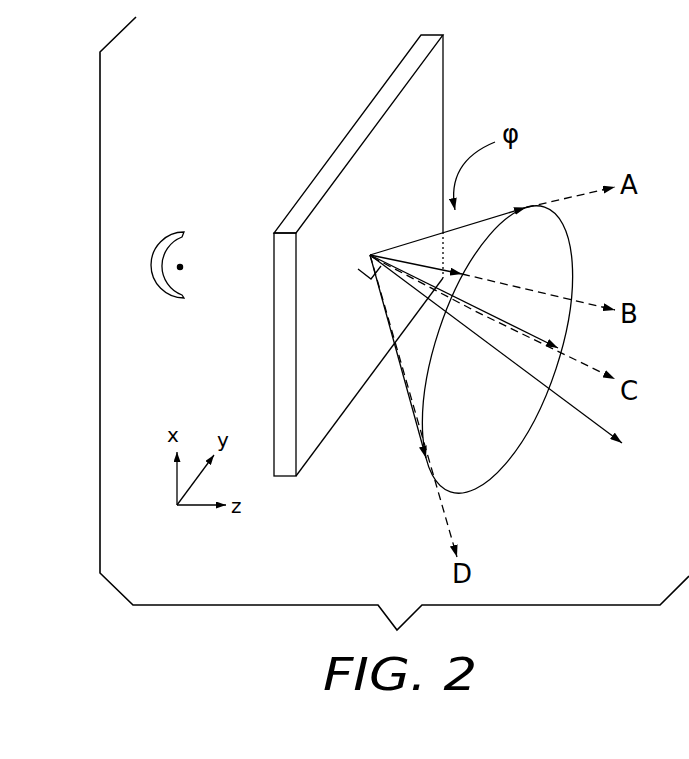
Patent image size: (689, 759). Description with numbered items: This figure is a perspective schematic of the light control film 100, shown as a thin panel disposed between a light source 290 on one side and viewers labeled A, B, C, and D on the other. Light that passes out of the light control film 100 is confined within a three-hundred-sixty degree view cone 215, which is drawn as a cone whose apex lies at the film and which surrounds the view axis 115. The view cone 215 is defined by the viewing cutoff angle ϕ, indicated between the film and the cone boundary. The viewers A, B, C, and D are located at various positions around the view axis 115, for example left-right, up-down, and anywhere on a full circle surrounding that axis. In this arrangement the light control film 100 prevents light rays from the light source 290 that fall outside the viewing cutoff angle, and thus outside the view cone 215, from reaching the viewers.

The light control film 100 is at (385, 81).
The light source 290 is at (162, 237).
The 360° view cone 215 is at (415, 370).
The view axis 115 is at (582, 418).